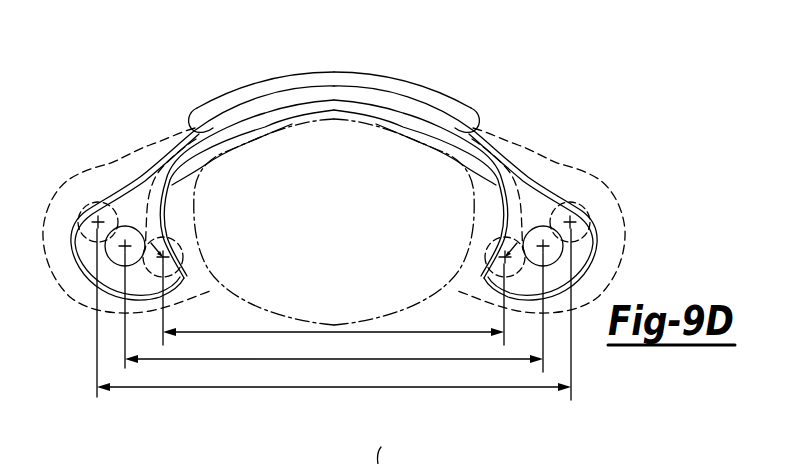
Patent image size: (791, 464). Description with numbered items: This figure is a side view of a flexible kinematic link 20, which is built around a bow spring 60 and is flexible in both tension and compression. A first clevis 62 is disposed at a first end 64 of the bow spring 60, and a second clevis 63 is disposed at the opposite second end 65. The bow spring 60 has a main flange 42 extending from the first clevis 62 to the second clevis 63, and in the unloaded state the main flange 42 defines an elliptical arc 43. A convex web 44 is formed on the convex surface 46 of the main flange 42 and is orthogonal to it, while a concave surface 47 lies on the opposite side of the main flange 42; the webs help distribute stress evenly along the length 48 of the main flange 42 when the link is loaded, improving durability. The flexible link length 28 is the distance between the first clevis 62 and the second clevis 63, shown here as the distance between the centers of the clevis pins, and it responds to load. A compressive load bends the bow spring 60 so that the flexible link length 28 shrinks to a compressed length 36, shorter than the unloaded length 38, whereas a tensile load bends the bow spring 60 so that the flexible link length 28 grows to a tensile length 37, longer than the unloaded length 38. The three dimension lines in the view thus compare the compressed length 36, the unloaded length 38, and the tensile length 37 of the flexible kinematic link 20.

The flexible kinematic link 20 is at (520, 72).
The flexible link length 28 is at (262, 332).
The compressed length 36 is at (333, 332).
The tensile length 37 is at (333, 388).
The unloaded length 38 is at (263, 360).
The main flange 42 is at (477, 128).
The elliptical arc 43 is at (430, 321).
The convex web 44 is at (333, 80).
The convex surface 46 is at (315, 87).
The concave surface 47 is at (250, 118).
The length of the main flange 48 is at (380, 441).
The bow spring 60 is at (384, 72).
The first clevis 62 is at (548, 297).
The second clevis 63 is at (72, 260).
The first end 64 is at (474, 124).
The second end 65 is at (192, 126).